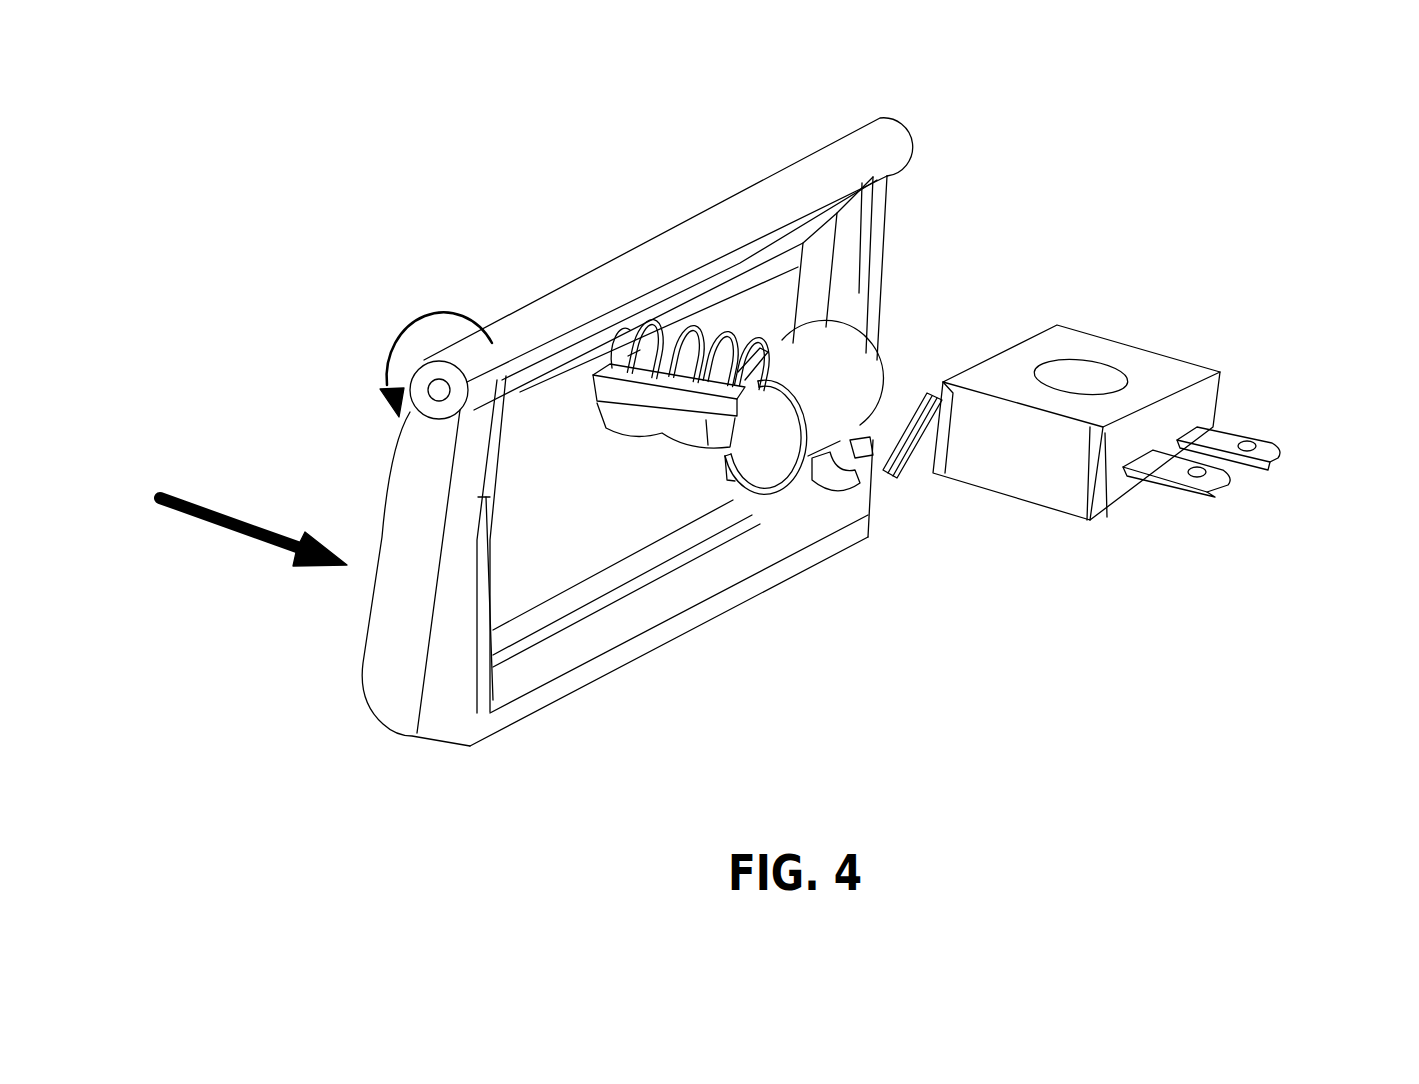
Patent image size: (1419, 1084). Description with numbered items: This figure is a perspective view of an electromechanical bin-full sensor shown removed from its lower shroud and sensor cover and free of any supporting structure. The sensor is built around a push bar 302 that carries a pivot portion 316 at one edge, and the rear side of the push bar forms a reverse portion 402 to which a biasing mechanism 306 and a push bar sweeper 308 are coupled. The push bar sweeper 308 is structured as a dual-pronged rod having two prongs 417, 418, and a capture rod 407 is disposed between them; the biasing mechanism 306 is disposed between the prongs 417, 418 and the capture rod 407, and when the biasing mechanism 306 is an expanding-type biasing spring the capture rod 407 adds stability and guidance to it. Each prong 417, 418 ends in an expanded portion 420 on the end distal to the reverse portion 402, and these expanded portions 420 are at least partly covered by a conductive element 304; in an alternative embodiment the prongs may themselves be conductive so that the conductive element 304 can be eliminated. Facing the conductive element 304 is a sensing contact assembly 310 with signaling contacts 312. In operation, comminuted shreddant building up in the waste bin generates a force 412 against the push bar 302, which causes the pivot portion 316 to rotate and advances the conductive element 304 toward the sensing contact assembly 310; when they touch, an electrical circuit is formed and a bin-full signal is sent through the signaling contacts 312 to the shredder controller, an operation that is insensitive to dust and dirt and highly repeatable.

The push bar 302 is at (370, 660).
The conductive element 304 is at (875, 362).
The biasing mechanism 306 is at (693, 330).
The push bar sweeper 308 is at (703, 440).
The sensing contact assembly 310 is at (845, 490).
The signaling contacts 312 is at (1220, 492).
The pivot portion 316 is at (512, 307).
The reverse portion of push bar 402 is at (530, 572).
The capture rod 407 is at (653, 353).
The force 412 is at (225, 515).
The prong 417 is at (672, 413).
The prong 418 is at (740, 347).
The expanded portion 420 is at (760, 430).